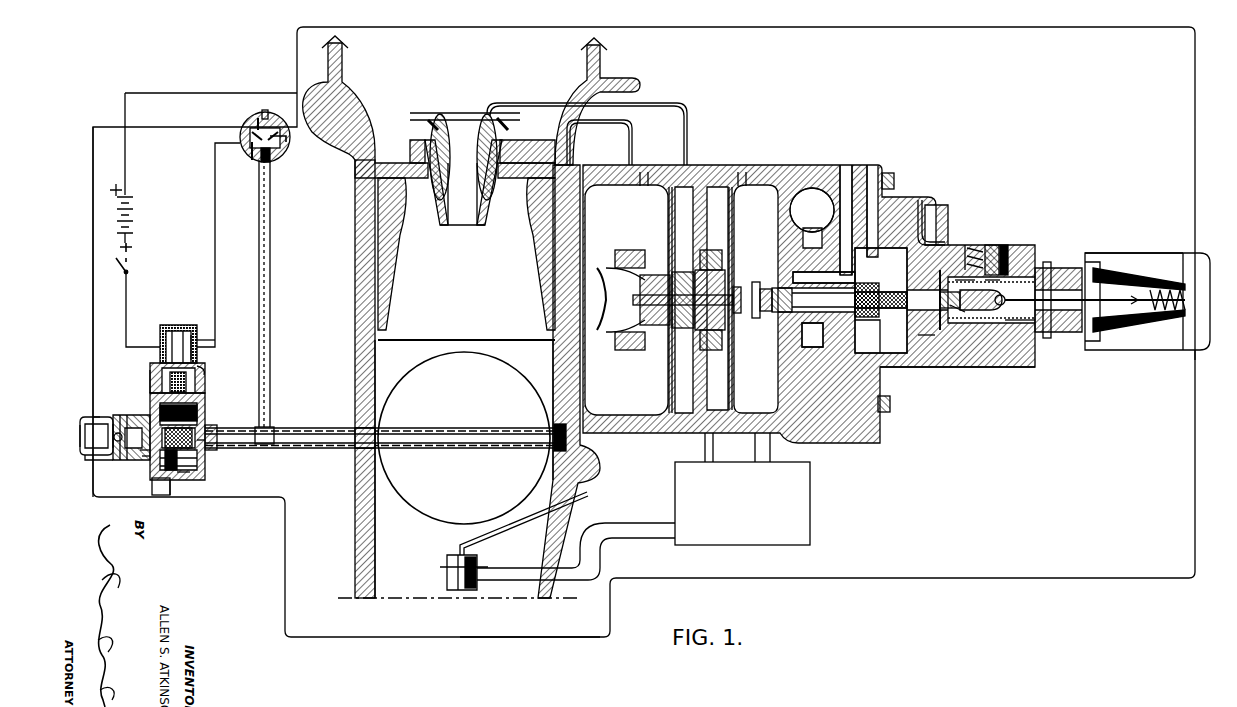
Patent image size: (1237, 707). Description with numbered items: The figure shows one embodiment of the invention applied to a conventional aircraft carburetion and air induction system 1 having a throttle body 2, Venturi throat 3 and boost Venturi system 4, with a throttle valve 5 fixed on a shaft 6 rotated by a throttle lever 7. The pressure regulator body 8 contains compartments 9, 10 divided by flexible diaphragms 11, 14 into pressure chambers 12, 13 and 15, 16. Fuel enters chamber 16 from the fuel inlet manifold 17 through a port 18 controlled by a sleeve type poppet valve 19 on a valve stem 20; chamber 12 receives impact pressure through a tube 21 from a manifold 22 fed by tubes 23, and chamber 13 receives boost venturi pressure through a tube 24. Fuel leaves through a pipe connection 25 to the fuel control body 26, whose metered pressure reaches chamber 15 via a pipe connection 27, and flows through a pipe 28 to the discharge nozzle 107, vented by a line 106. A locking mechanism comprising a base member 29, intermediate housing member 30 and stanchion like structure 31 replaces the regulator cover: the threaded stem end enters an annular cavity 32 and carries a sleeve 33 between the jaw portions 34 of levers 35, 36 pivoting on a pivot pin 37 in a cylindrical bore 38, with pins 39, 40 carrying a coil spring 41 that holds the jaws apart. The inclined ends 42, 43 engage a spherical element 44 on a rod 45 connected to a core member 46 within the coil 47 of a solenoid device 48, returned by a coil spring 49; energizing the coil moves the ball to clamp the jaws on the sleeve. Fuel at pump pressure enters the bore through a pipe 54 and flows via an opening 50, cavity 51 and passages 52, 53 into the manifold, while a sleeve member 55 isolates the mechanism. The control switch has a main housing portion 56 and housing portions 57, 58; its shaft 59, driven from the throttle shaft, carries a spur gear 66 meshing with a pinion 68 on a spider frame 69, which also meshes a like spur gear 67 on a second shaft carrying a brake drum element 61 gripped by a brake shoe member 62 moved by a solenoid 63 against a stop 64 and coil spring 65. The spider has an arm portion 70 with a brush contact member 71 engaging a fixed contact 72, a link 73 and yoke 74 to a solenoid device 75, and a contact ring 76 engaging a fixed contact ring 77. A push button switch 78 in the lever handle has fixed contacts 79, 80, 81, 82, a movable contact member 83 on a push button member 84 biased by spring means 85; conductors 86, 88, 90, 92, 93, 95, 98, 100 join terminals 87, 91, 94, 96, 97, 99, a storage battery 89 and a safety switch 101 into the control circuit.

The air induction system 1 is at (354, 270).
The throttle body 2 is at (382, 363).
The Venturi throat 3 is at (400, 258).
The boost Venturi system 4 is at (448, 145).
The throttle valve 5 is at (453, 403).
The shaft 6 is at (313, 428).
The throttle lever 7 is at (259, 268).
The pressure regulator body 8 is at (706, 165).
The compartment 9 is at (644, 185).
The compartment 10 is at (744, 186).
The flexible diaphragm 11 is at (667, 220).
The pressure chamber 12 is at (592, 230).
The pressure chamber 13 is at (672, 223).
The flexible diaphragm 14 is at (735, 232).
The pressure chamber 15 is at (707, 230).
The pressure chamber 16 is at (744, 258).
The fuel inlet manifold 17 is at (804, 218).
The port 18 is at (810, 271).
The sleeve type poppet valve 19 is at (878, 408).
The valve stem 20 is at (839, 300).
The tube 21 is at (607, 121).
The manifold 22 is at (506, 166).
The tubes 23 is at (432, 120).
The tube 24 is at (640, 103).
The pipe connection 25 is at (755, 450).
The fuel control body 26 is at (726, 510).
The pipe connection 27 is at (705, 450).
The pipe 28 is at (622, 522).
The base member 29 is at (890, 368).
The intermediate housing member 30 is at (1018, 246).
The stanchion like structure 31 is at (1058, 333).
The annular cavity 32 is at (886, 335).
The sleeve 33 is at (850, 175).
The jaw portions 34 is at (890, 180).
The lever 35 is at (950, 290).
The lever 36 is at (975, 323).
The pivot pin 37 is at (990, 330).
The cylindrical bore 38 is at (1026, 340).
The pin 39 is at (958, 335).
The pin 40 is at (942, 270).
The coil spring 41 is at (926, 200).
The lever end 42 is at (1004, 245).
The lever end 43 is at (1000, 323).
The spherical element 44 is at (1012, 335).
The rod 45 is at (1036, 302).
The core member 46 is at (1112, 315).
The coil 47 is at (1130, 328).
The solenoid device 48 is at (1110, 253).
The coil spring 49 is at (1165, 290).
The opening 50 is at (948, 330).
The cavity 51 is at (912, 282).
The passage 52 is at (870, 185).
The passage 53 is at (838, 185).
The pipe 54 is at (992, 245).
The sleeve member 55 is at (970, 245).
The main housing portion 56 is at (206, 445).
The lateral housing portion 57 is at (82, 417).
The vertical housing portion 58 is at (198, 353).
The shaft 59 is at (217, 432).
The brake drum element 61 is at (126, 415).
The brake shoe member 62 is at (119, 415).
The solenoid 63 is at (96, 436).
The stop 64 is at (140, 416).
The coil spring 65 is at (113, 420).
The spur gear 66 is at (206, 460).
The spur gear 67 is at (200, 472).
The pinion 68 is at (198, 412).
The spider frame 69 is at (206, 400).
The arm portion 70 is at (160, 470).
The brush contact member 71 is at (186, 482).
The fixed contact 72 is at (176, 484).
The link 73 is at (187, 382).
The yoke 74 is at (206, 371).
The solenoid device 75 is at (177, 340).
The contact ring 76 is at (145, 460).
The contact ring 77 is at (140, 452).
The push button switch 78 is at (286, 152).
The fixed contact 79 is at (252, 130).
The fixed contact 80 is at (274, 130).
The fixed contact 81 is at (250, 152).
The fixed contact 82 is at (288, 139).
The movable contact member 83 is at (258, 118).
The push button member 84 is at (265, 110).
The spring means 85 is at (272, 160).
The conductor 86 is at (790, 28).
The terminal 87 is at (1203, 253).
The conductor 88 is at (168, 94).
The storage battery 89 is at (134, 203).
The conductor 90 is at (128, 300).
The terminal 91 is at (156, 365).
The conductor 92 is at (152, 388).
The conductor 93 is at (214, 238).
The terminal 94 is at (193, 345).
The conductor 95 is at (92, 290).
The terminal 96 is at (92, 415).
The terminal 97 is at (88, 458).
The conductor 98 is at (478, 639).
The terminal 99 is at (1195, 352).
The conductor 100 is at (170, 486).
The safety switch 101 is at (120, 264).
The line 106 is at (574, 500).
The valve controlled discharge nozzle 107 is at (455, 590).